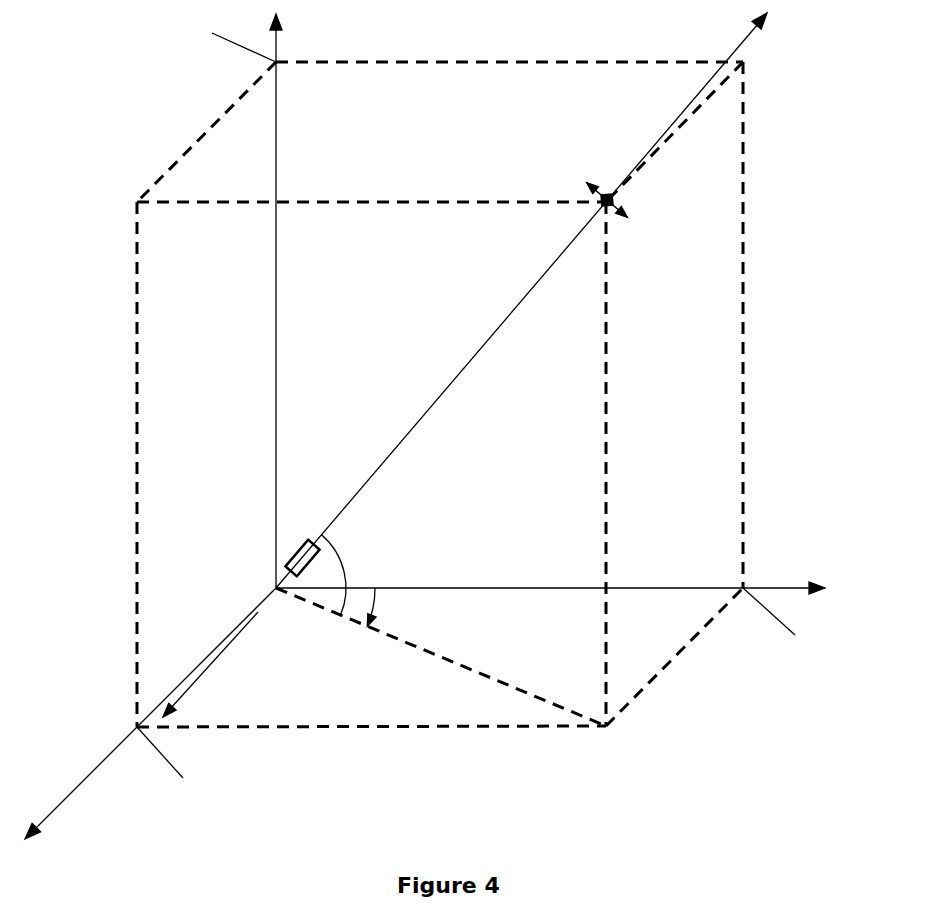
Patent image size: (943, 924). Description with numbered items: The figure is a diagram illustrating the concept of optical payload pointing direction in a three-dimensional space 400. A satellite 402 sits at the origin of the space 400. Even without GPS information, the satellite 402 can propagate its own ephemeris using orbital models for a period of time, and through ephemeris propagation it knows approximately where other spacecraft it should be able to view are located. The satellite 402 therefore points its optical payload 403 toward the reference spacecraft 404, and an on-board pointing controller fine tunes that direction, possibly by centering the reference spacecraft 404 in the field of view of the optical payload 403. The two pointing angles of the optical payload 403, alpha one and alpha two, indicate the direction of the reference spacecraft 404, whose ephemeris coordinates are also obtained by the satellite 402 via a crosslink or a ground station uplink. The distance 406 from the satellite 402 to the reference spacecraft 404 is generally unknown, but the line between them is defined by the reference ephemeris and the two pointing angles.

The three-dimensional space 400 is at (76, 106).
The satellite 402 is at (274, 586).
The optical payload 403 is at (309, 537).
The reference spacecraft 404 is at (604, 197).
The distance 406 is at (460, 372).